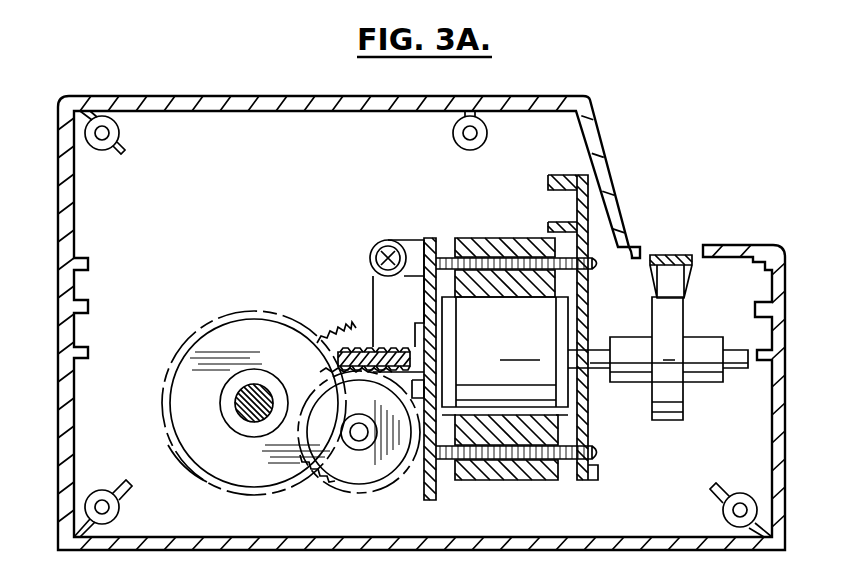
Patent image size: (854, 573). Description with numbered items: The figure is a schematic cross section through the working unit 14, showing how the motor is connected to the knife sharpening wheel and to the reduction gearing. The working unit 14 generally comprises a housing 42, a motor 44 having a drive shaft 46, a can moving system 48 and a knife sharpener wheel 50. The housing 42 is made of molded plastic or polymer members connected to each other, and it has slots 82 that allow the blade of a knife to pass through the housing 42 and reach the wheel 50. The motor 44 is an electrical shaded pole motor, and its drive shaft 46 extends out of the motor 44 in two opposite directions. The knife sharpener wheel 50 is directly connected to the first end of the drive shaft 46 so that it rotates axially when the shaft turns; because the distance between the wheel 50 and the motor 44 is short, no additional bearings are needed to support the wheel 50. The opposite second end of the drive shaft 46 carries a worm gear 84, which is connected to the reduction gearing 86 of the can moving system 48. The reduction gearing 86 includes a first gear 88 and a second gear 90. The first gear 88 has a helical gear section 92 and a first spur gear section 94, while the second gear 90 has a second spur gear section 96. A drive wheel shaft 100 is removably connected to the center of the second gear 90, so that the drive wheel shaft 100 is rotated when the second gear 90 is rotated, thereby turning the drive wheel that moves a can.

The working unit 14 is at (128, 90).
The housing 42 is at (221, 96).
The motor 44 is at (511, 339).
The drive shaft 46 is at (597, 364).
The can moving system 48 is at (196, 366).
The knife sharpener wheel 50 is at (686, 409).
The slots 82 is at (692, 254).
The worm gear 84 is at (346, 349).
The reduction gearing 86 is at (232, 312).
The first gear 88 is at (345, 494).
The second gear 90 is at (207, 478).
The helical gear section 92 is at (328, 487).
The first spur gear section 94 is at (368, 448).
The second spur gear section 96 is at (263, 318).
The drive wheel shaft 100 is at (252, 411).